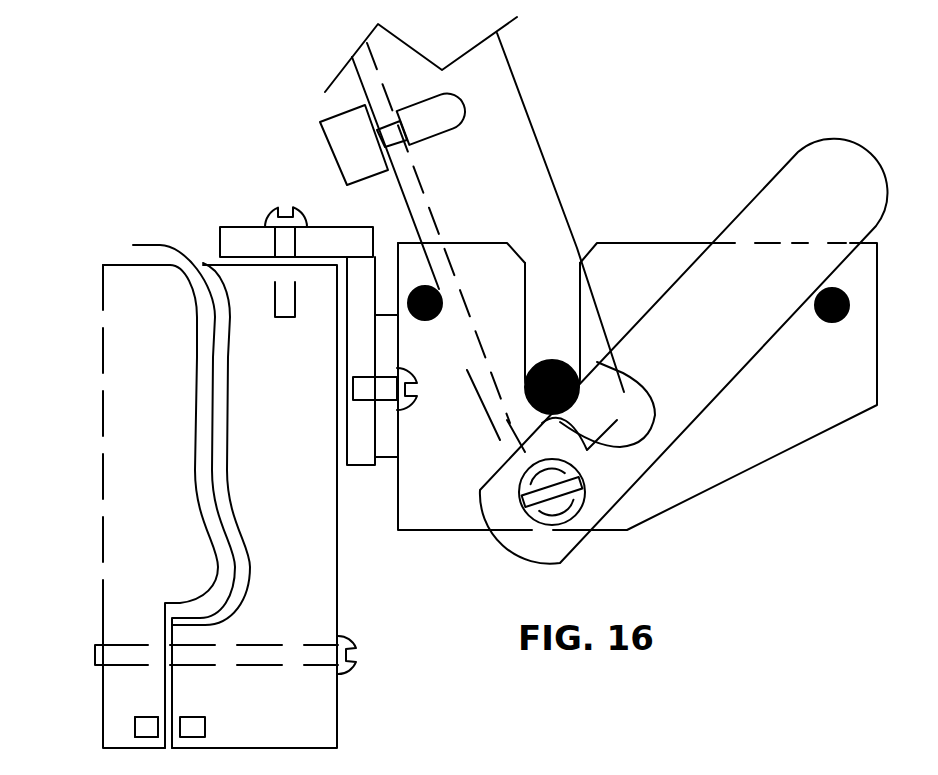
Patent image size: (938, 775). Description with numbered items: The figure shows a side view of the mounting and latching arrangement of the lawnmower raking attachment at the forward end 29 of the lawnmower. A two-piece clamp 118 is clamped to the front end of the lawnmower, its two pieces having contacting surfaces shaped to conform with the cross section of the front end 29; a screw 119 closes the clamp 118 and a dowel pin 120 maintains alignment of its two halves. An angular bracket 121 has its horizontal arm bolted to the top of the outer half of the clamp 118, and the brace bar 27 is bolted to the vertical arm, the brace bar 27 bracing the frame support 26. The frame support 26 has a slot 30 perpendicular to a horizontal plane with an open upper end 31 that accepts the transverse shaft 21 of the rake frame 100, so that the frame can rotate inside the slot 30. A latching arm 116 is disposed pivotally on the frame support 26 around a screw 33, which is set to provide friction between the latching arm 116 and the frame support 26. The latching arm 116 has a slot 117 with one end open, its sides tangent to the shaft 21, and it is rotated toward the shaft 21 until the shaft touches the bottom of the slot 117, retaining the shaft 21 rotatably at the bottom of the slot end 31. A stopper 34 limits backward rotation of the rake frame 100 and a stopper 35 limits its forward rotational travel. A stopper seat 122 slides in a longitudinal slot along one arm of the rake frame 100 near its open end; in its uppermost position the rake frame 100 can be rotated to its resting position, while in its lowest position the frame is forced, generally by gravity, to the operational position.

The transverse shaft 21 is at (550, 358).
The frame support 26 is at (842, 433).
The brace bar 27 is at (383, 468).
The forward end of the lawnmower 29 is at (160, 243).
The slot 30 is at (533, 268).
The upper end of slot 31 is at (553, 277).
The screw 33 is at (585, 518).
The stopper 34 is at (442, 290).
The stopper 35 is at (820, 330).
The rake frame 100 is at (548, 157).
The latching arm 116 is at (752, 192).
The slot of latching arm 117 is at (637, 410).
The two-piece clamp 118 is at (343, 722).
The screw 119 is at (357, 645).
The dowel pin 120 is at (128, 735).
The angular bracket 121 is at (235, 222).
The stopper seat 122 is at (463, 97).